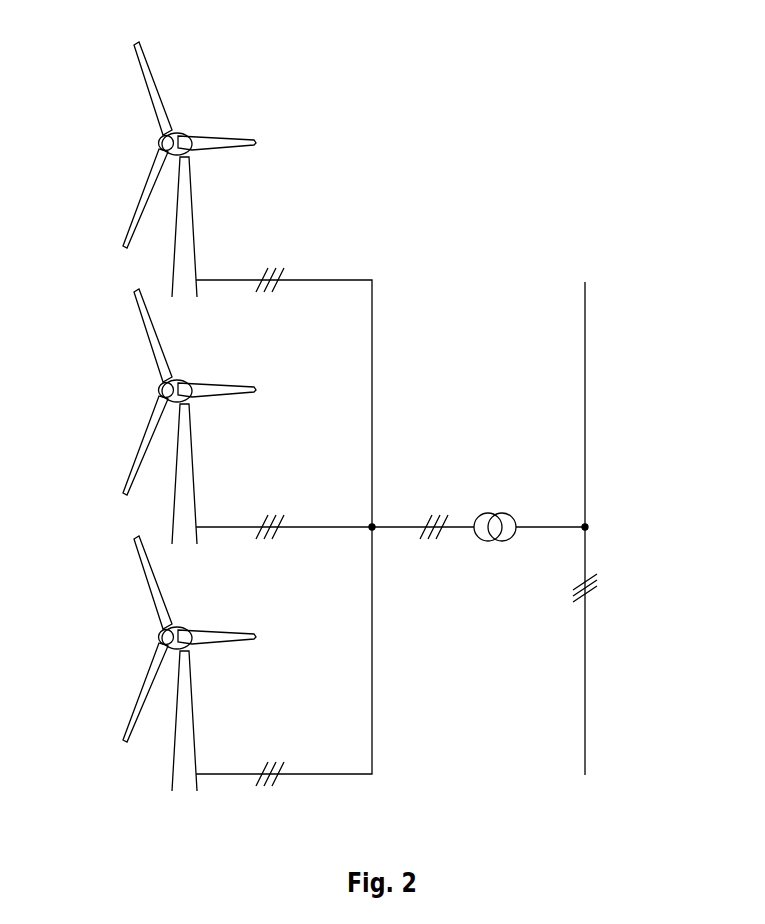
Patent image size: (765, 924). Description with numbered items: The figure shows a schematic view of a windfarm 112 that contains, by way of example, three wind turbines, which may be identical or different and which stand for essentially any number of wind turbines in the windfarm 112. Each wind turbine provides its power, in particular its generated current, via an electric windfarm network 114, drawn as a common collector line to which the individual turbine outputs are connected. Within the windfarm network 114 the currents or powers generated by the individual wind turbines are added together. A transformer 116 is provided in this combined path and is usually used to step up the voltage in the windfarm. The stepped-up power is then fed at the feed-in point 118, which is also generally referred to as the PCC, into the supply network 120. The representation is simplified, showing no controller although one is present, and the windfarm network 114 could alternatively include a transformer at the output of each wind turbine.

The windfarm 112 is at (432, 146).
The electric windfarm network 114 is at (390, 527).
The transformer 116 is at (498, 504).
The feed-in point 118 is at (595, 513).
The supply network 120 is at (586, 307).